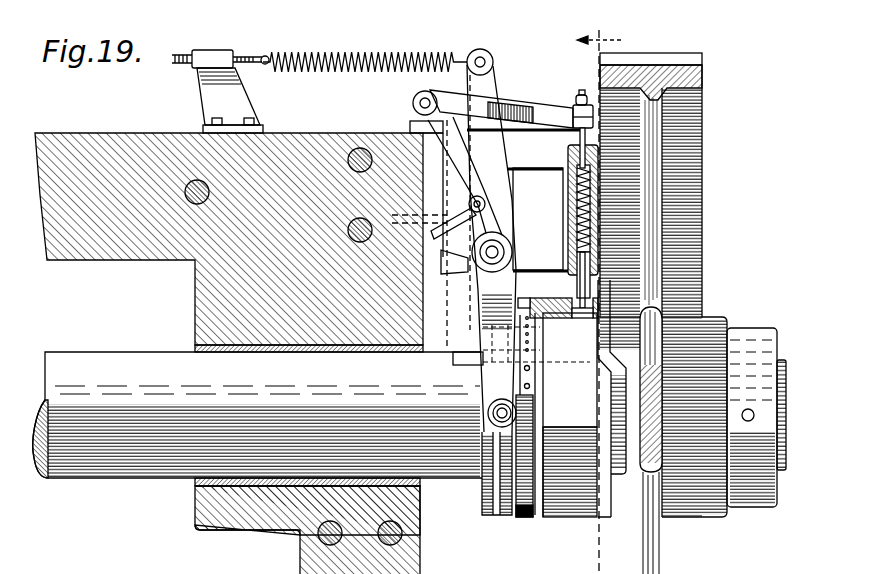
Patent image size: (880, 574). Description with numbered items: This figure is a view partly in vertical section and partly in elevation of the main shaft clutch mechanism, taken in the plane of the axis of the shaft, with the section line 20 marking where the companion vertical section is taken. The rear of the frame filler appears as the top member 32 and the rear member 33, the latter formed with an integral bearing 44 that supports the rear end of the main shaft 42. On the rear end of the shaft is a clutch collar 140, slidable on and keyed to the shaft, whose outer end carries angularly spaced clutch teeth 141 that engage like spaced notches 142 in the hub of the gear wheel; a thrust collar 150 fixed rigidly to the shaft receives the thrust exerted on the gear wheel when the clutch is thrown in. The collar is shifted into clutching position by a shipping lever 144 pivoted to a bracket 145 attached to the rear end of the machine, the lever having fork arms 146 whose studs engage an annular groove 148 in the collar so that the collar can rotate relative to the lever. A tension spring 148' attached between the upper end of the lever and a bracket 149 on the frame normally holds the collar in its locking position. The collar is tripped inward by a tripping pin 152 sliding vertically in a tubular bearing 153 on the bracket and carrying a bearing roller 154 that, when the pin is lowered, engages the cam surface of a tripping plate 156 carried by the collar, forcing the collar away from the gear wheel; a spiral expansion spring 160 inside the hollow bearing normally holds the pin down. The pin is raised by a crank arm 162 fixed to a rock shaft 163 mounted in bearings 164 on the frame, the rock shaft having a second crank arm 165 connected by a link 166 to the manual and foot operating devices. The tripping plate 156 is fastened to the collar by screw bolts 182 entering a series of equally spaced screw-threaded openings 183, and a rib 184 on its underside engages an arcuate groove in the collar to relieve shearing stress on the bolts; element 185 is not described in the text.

The section line 20— 20 is at (599, 292).
The top filler member 32 is at (122, 134).
The rear filler member 33 is at (410, 566).
The main shaft 42 is at (257, 415).
The bearing 44 is at (220, 520).
The clutch collar 140 is at (557, 518).
The clutch teeth 141 is at (606, 405).
The notches 142 is at (661, 410).
The shipping lever 144 is at (499, 212).
The bracket 145 is at (464, 278).
The fork arms 146 is at (486, 372).
The annular groove 148 is at (493, 492).
The tension spring 148' is at (365, 45).
The bracket 149 is at (243, 97).
The thrust collar 150 is at (752, 502).
The tripping pin 152 is at (578, 288).
The tubular bearing 153 is at (568, 226).
The bearing roller 154 is at (598, 315).
The tripping plate 156 is at (570, 370).
The spiral expansion spring 160 is at (563, 168).
The crank arm 162 is at (505, 101).
The rock shaft 163 is at (413, 103).
The bearings 164 is at (410, 125).
The crank arm 165 is at (461, 140).
The link 166 is at (452, 255).
The screw bolts 182 is at (523, 297).
The screw-threaded openings 183 is at (525, 387).
The rib 184 is at (555, 415).
The pin 185 is at (540, 376).